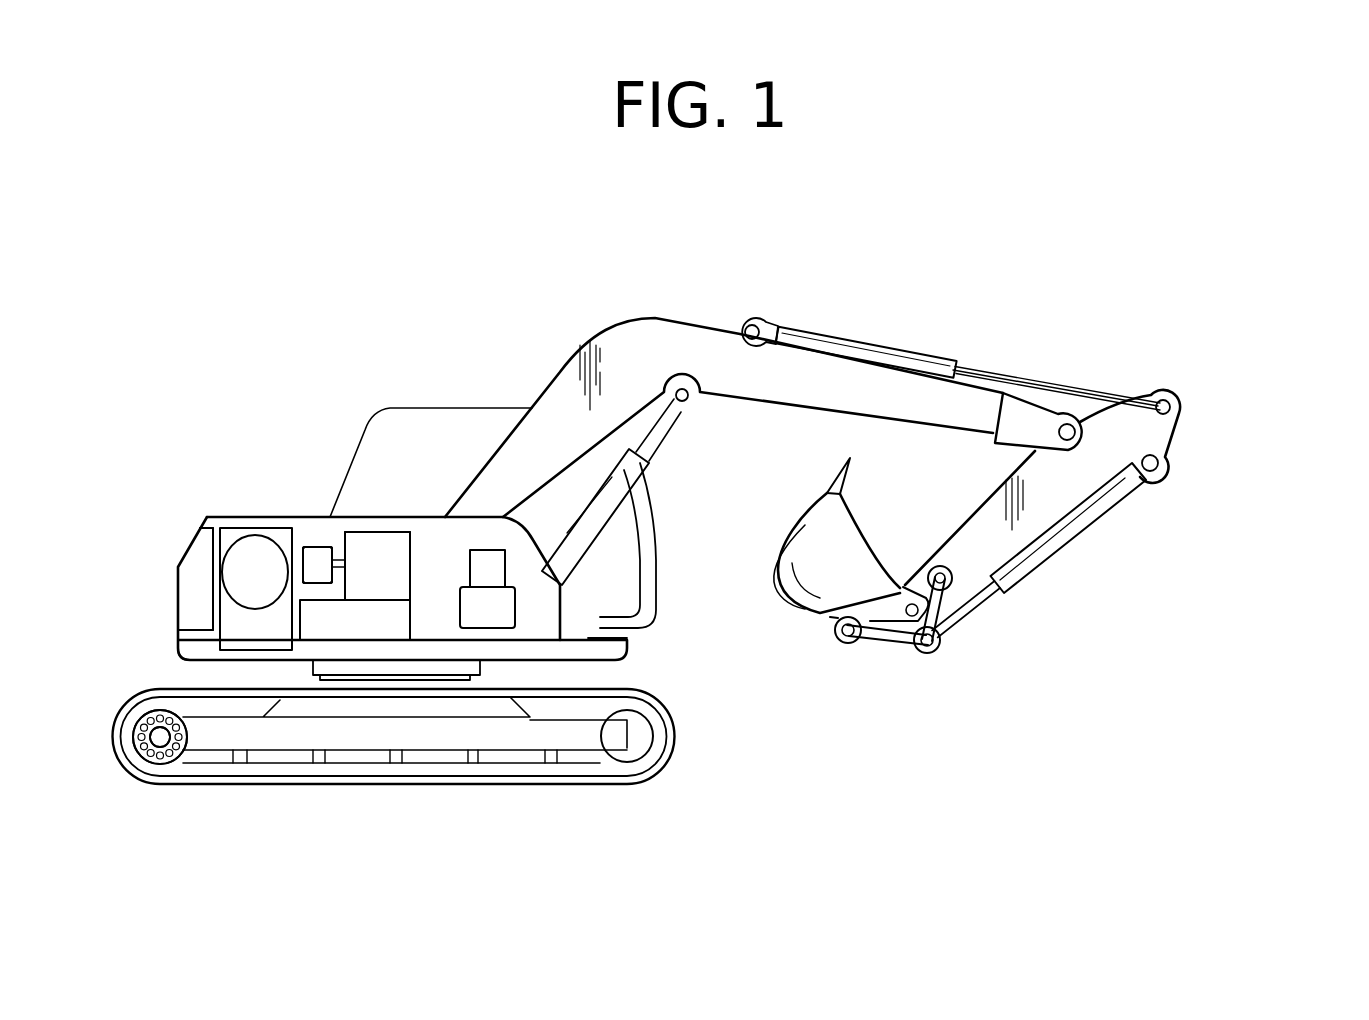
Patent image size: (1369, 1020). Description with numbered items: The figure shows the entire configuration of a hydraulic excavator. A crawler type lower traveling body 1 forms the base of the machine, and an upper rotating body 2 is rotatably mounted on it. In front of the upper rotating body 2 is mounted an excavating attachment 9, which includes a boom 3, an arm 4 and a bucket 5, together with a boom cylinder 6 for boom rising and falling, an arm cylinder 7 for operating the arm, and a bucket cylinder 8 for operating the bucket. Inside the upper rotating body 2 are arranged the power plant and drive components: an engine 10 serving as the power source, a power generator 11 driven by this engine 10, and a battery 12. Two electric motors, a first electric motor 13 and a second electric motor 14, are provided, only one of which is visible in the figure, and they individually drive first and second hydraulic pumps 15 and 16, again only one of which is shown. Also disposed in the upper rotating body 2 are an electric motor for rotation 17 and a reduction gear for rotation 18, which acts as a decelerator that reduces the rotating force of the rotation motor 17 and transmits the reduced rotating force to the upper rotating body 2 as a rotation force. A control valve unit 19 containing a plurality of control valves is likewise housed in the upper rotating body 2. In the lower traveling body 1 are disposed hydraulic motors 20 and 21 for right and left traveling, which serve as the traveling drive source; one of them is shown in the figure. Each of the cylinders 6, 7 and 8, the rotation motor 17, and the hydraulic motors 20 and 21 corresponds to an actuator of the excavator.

The lower traveling body 1 is at (389, 808).
The upper rotating body 2 is at (176, 494).
The boom 3 is at (663, 318).
The arm 4 is at (990, 500).
The bucket 5 is at (803, 522).
The boom cylinder 6 is at (652, 447).
The arm cylinder 7 is at (1045, 377).
The bucket cylinder 8 is at (1073, 533).
The excavating attachment 9 is at (1216, 418).
The engine 10 is at (255, 527).
The power generator 11 is at (240, 563).
The battery 12 is at (178, 615).
The first electric motor 13 is at (383, 537).
The second electric motor 14 is at (377, 566).
The first hydraulic pump 15 is at (318, 545).
The second hydraulic pump 16 is at (317, 565).
The electric motor for rotation 17 is at (488, 548).
The reduction gear for rotation 18 is at (505, 618).
The control valve unit 19 is at (317, 565).
The hydraulic motor for traveling 20 is at (163, 760).
The hydraulic motor for traveling 21 is at (160, 737).